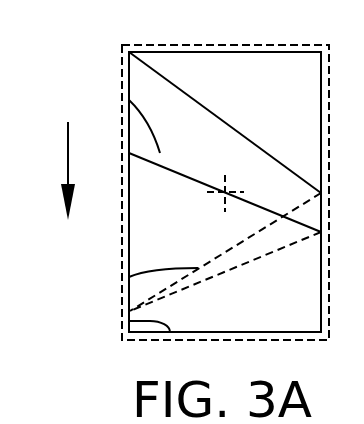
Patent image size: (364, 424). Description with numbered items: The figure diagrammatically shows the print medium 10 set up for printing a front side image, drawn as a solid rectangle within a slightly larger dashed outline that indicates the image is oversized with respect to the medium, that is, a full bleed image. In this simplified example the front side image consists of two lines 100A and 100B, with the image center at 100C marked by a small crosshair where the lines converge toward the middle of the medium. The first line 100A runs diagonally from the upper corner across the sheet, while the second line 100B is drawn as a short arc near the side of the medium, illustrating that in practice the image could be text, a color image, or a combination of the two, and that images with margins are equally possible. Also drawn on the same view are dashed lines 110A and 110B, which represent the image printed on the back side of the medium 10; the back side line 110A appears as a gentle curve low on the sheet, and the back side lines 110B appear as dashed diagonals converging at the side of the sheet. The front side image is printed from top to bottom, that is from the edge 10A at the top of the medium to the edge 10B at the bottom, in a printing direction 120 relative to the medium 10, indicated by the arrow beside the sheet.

The print medium 10 is at (138, 237).
The edge of the print medium 10A is at (163, 47).
The edge of the print medium 10B is at (129, 320).
The line of the front side image 100A is at (278, 158).
The line of the front side image 100B is at (129, 100).
The image center 100C is at (220, 192).
The back side image line 110A is at (129, 276).
The back side image lines 110B is at (220, 273).
The printing direction 120 is at (67, 170).